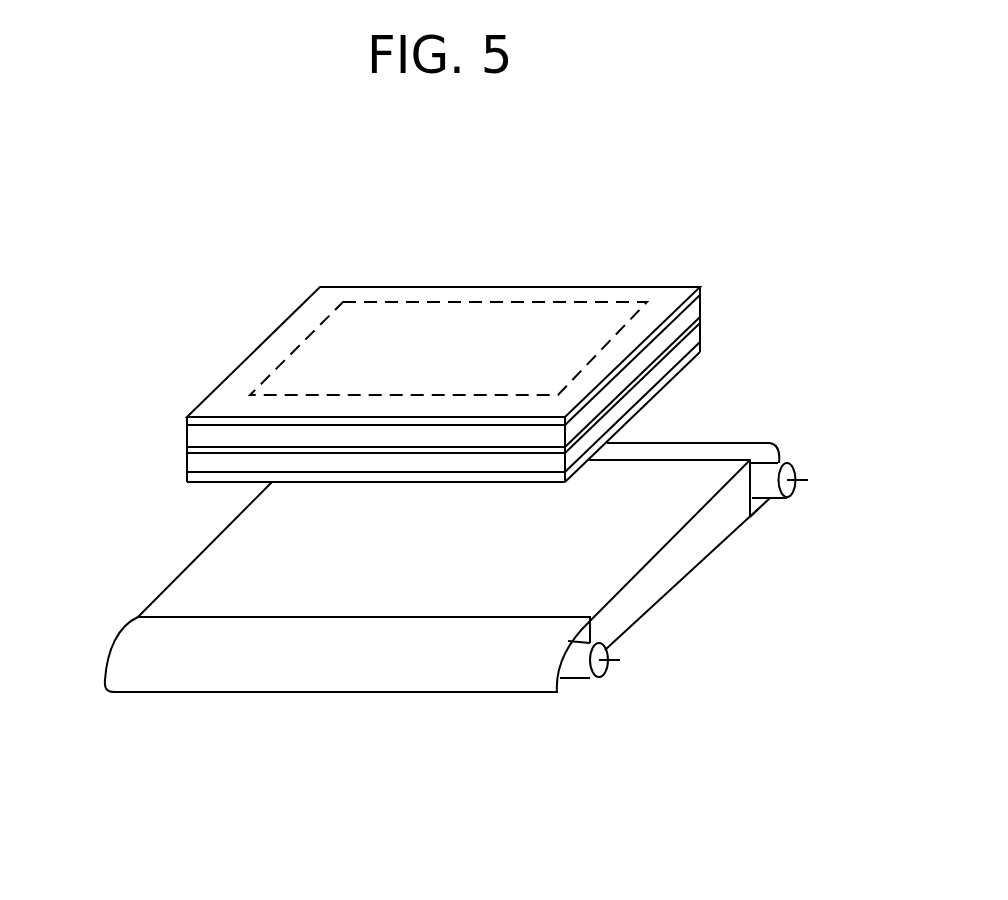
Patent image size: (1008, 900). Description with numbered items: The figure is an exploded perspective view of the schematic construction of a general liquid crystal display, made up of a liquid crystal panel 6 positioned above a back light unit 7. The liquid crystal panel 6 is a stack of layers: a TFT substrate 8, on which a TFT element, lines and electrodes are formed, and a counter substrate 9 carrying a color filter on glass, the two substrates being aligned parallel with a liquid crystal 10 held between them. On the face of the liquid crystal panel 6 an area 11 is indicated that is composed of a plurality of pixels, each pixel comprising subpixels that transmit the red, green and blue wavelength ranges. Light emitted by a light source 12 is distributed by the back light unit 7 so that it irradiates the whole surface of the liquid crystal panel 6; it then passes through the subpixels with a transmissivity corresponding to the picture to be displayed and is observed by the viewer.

The liquid crystal panel 6 is at (464, 322).
The back light unit 7 is at (468, 608).
The TFT substrate 8 is at (667, 382).
The counter substrate 9 is at (667, 298).
The liquid crystal 10 is at (677, 342).
The area 11 is at (569, 303).
The light source 12 is at (790, 488).